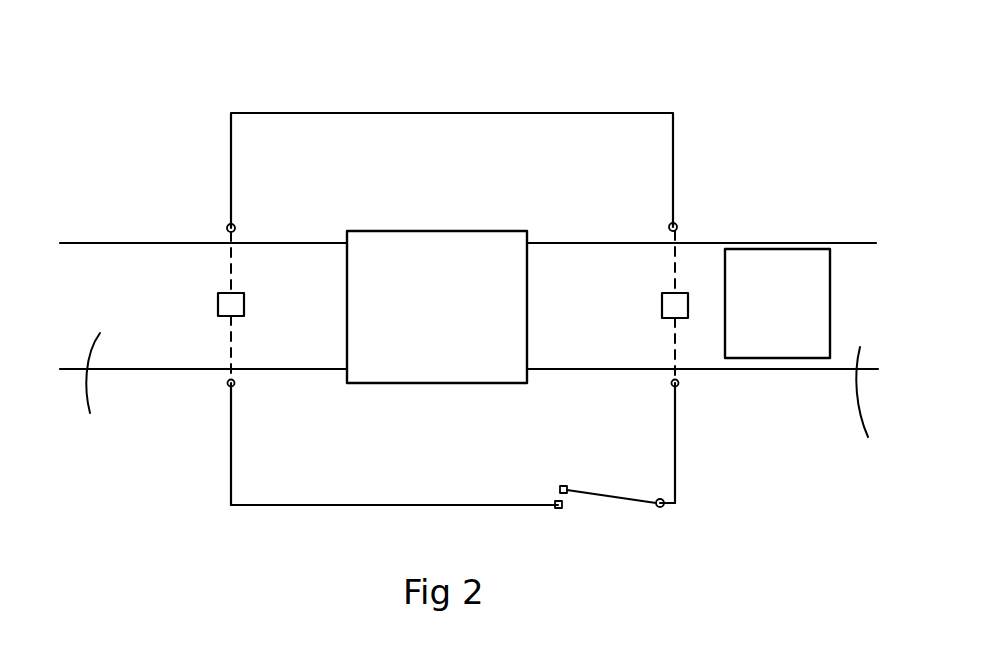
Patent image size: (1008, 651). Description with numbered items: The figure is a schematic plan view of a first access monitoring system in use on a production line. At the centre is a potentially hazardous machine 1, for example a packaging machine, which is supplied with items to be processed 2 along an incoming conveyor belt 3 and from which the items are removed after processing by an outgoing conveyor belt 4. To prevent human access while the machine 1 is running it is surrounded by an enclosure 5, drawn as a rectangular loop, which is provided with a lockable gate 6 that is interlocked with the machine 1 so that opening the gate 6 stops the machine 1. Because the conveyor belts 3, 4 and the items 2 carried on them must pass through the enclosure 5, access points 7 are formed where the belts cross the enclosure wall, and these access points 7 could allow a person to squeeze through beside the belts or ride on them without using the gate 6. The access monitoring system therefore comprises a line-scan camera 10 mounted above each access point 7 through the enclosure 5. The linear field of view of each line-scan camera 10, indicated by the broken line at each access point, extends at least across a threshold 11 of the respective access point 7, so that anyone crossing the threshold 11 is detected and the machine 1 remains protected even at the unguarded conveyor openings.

The machine 1 is at (475, 275).
The items to be processed 2 is at (778, 278).
The incoming conveyor belt 3 is at (703, 363).
The outgoing conveyor belt 4 is at (203, 352).
The enclosure 5 is at (326, 112).
The lockable gate 6 is at (605, 497).
The access points 7 is at (218, 278).
The line-scan camera 10 is at (237, 318).
The threshold 11 is at (230, 350).